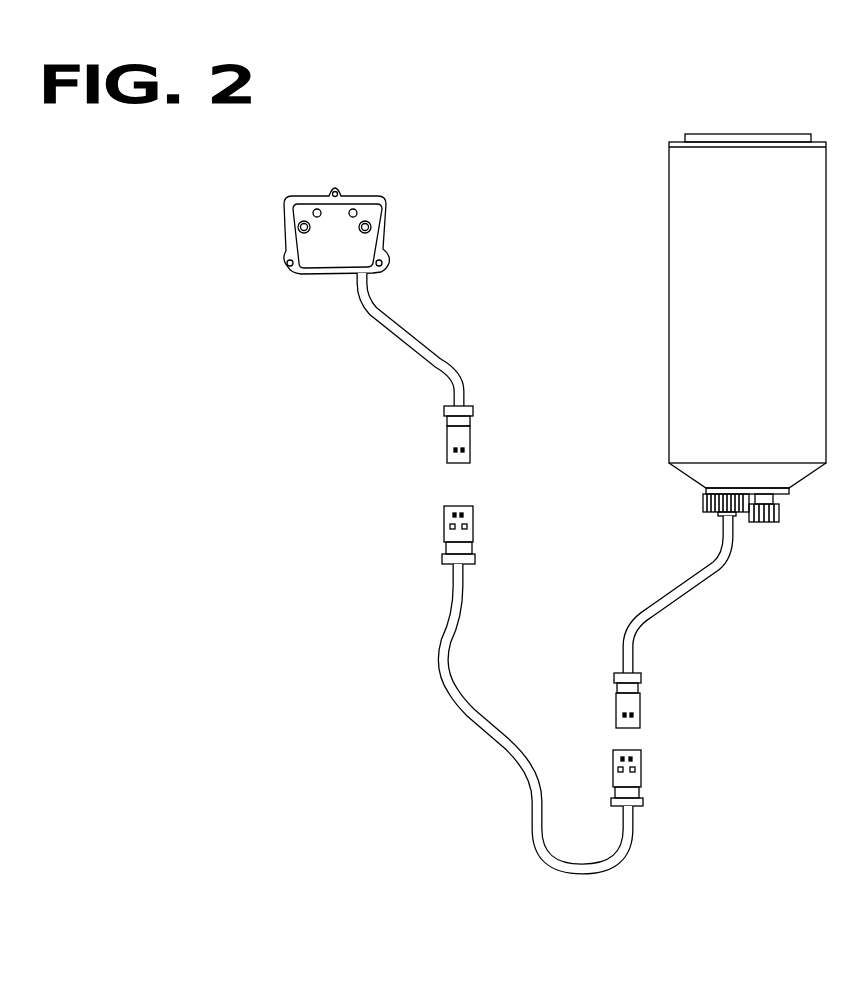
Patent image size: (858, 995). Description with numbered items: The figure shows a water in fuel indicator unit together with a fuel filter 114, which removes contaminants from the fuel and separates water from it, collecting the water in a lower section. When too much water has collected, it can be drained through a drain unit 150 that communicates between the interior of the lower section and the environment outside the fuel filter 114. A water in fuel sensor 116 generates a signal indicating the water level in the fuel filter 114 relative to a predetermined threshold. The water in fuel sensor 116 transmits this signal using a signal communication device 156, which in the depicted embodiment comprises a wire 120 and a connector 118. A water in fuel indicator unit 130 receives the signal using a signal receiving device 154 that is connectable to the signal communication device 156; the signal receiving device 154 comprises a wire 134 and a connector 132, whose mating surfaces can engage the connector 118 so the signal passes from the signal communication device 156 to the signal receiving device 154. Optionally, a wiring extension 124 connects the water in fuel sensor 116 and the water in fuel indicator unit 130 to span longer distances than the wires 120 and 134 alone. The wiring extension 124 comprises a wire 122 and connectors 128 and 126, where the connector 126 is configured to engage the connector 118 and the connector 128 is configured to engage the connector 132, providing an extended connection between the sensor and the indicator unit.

The fuel filter 114 is at (770, 278).
The water in fuel sensor 116 is at (743, 515).
The connector 118 is at (640, 710).
The wire 120 is at (677, 598).
The wire 122 is at (437, 640).
The wiring extension 124 is at (508, 718).
The connector 126 is at (641, 770).
The connector 128 is at (441, 527).
The water in fuel indicator unit 130 is at (388, 228).
The connector 132 is at (470, 432).
The wire 134 is at (462, 362).
The drain unit 150 is at (779, 513).
The signal receiving device 154 is at (451, 305).
The signal communication device 156 is at (648, 582).